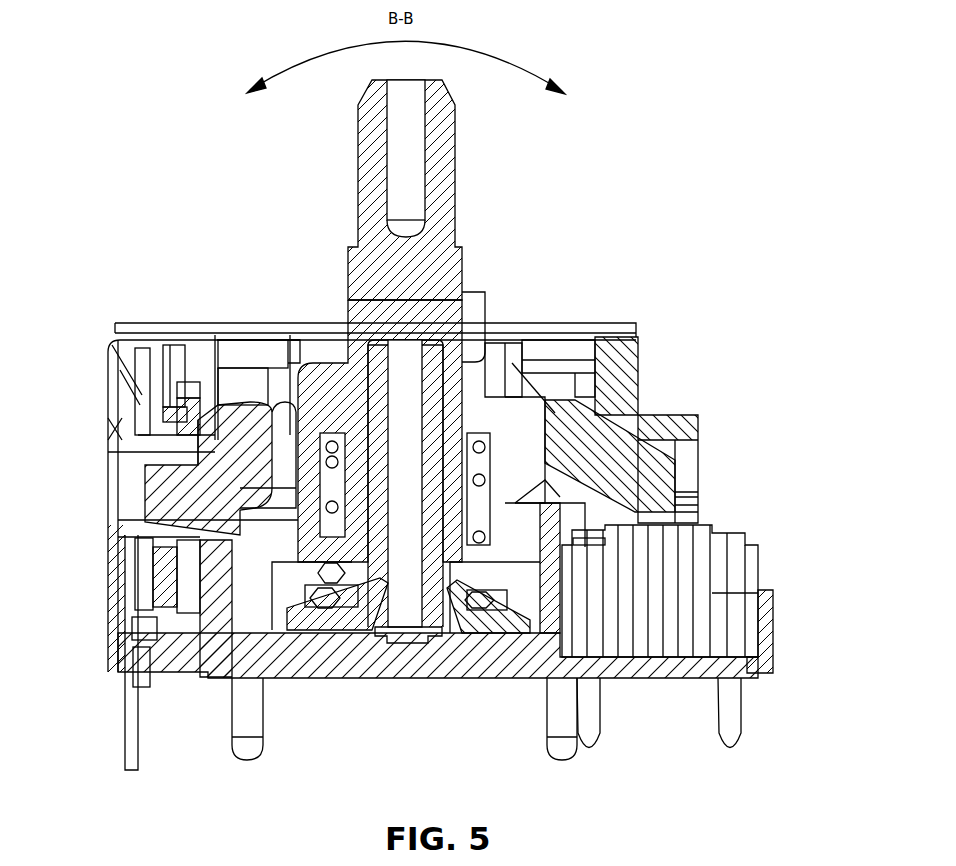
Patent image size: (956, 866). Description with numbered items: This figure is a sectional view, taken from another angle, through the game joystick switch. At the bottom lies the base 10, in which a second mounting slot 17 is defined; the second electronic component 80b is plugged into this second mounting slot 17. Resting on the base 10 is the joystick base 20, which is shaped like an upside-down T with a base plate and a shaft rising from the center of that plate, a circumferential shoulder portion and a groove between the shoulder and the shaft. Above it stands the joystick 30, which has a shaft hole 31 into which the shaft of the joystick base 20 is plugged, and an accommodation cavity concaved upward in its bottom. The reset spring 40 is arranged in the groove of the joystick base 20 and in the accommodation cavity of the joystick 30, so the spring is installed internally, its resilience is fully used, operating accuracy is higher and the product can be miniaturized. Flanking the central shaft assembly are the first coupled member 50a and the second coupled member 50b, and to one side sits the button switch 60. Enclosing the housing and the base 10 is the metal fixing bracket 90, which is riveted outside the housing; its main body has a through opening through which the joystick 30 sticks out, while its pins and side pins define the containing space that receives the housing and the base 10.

The base 10 is at (650, 670).
The second mounting slot 17 is at (152, 672).
The joystick base 20 is at (410, 653).
The joystick 30 is at (455, 173).
The shaft hole 31 is at (350, 300).
The reset spring 40 is at (312, 668).
The first coupled member 50a is at (483, 299).
The second coupled member 50b is at (143, 484).
The button switch 60 is at (760, 597).
The second electronic component 80b is at (133, 557).
The fixing bracket 90 is at (117, 333).